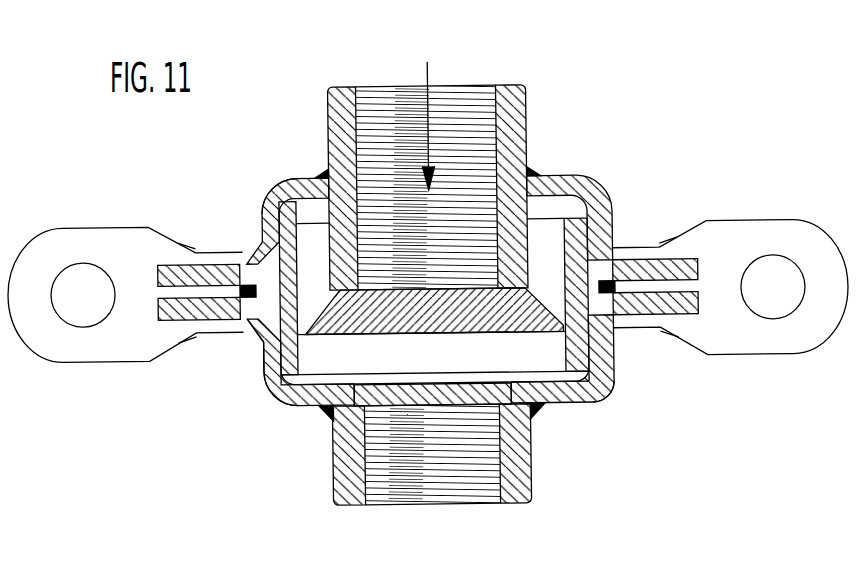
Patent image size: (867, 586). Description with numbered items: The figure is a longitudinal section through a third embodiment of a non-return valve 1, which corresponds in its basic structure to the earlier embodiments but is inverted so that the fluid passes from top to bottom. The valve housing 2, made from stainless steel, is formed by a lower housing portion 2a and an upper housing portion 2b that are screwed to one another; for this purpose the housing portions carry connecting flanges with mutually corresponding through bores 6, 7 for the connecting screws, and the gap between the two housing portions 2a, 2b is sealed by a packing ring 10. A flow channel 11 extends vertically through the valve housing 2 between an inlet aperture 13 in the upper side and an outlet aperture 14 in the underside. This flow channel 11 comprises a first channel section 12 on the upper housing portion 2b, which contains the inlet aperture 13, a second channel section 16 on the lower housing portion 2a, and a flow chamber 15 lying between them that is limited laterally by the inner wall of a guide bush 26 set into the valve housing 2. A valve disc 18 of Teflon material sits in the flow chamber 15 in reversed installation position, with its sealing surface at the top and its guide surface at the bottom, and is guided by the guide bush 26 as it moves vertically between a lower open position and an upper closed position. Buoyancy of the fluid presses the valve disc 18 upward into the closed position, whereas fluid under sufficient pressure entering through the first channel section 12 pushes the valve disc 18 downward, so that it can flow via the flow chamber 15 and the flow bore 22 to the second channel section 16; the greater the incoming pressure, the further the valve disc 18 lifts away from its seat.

The non-return valve 1 is at (557, 129).
The valve housing 2 is at (590, 187).
The lower housing portion 2a is at (283, 390).
The upper housing portion 2b is at (272, 205).
The through bore 6 is at (82, 273).
The through bore 7 is at (767, 272).
The packing ring 10 is at (625, 312).
The flow channel 11 is at (541, 400).
The first channel section 12 is at (338, 119).
The inlet aperture 13 is at (453, 105).
The outlet aperture 14 is at (480, 482).
The flow chamber 15 is at (339, 363).
The second channel section 16 is at (523, 459).
The valve disc 18 is at (420, 317).
The flow bore 22 is at (595, 389).
The guide bush 26 is at (260, 368).